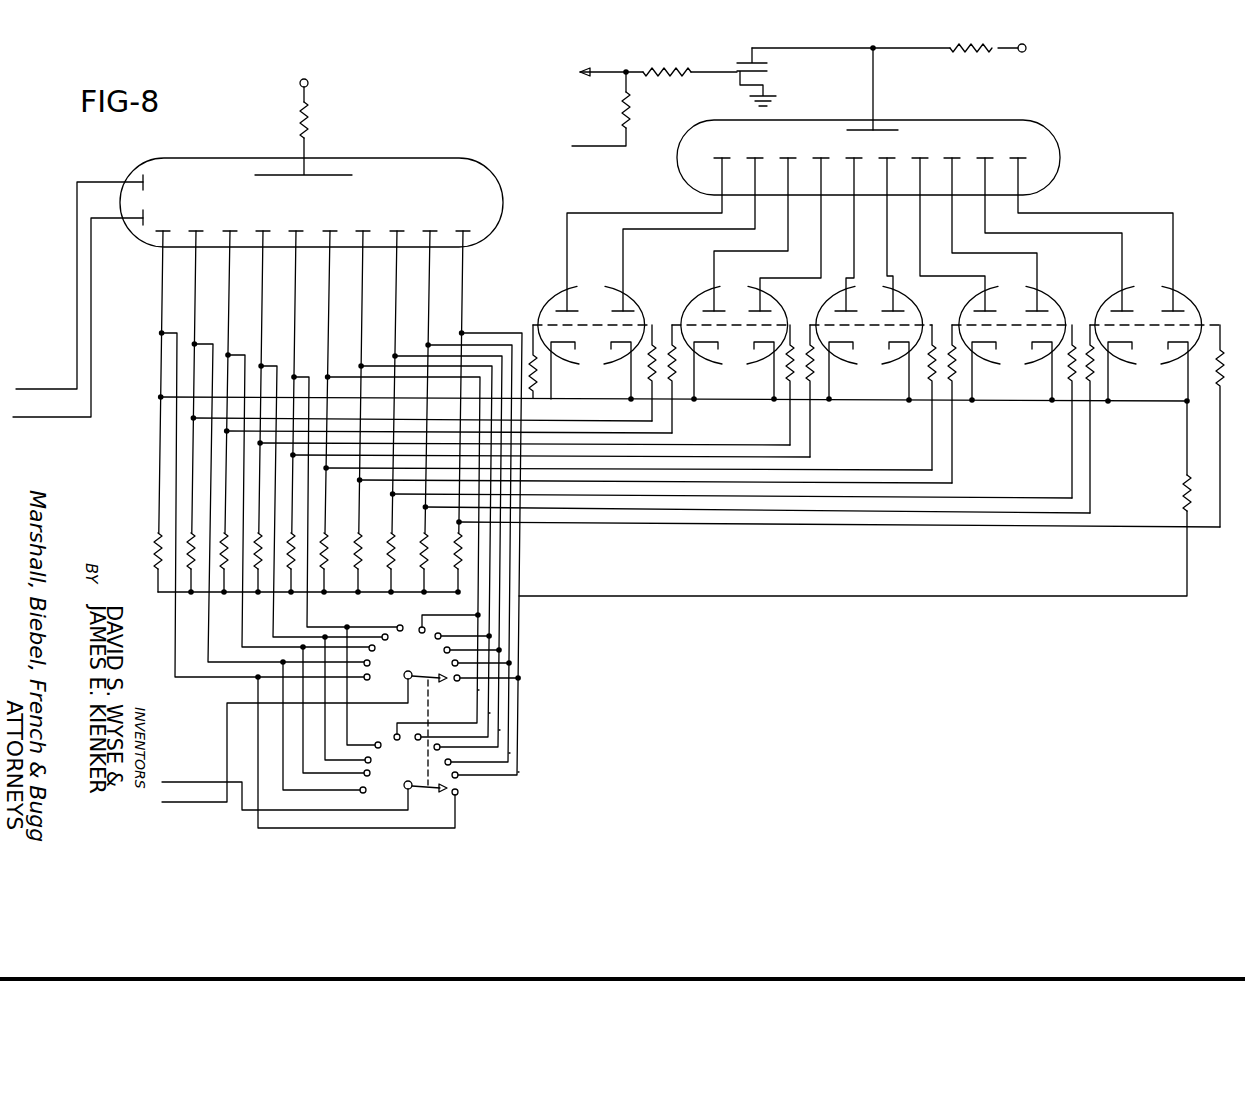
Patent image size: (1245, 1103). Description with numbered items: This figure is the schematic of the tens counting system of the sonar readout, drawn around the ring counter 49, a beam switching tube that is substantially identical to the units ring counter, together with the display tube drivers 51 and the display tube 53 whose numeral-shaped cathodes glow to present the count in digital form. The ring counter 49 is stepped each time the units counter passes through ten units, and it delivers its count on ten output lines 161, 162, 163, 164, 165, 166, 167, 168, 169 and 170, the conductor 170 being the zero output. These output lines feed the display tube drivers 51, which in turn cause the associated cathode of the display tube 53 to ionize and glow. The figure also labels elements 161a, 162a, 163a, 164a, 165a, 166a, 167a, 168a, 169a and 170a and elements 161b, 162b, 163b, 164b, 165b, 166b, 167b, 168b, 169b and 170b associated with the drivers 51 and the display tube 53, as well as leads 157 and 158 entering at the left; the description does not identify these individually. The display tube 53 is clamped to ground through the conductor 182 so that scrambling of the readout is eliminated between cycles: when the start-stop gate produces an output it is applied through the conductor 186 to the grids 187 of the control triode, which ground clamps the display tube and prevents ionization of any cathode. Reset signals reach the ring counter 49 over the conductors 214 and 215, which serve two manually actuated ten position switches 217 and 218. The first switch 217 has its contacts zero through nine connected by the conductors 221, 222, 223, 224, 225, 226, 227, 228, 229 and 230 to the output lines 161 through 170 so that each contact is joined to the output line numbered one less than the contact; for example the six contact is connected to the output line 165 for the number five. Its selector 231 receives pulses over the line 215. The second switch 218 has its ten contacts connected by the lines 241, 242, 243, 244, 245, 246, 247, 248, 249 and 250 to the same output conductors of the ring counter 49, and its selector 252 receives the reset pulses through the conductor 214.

The ring counter 49 is at (367, 158).
The display tube driver 51 is at (546, 304).
The display tube 53 is at (1055, 125).
The input lead 157 is at (49, 420).
The input lead 158 is at (64, 388).
The output line 161 is at (161, 293).
The output line 162 is at (194, 297).
The output line 163 is at (227, 301).
The output line 164 is at (262, 297).
The output line 165 is at (294, 301).
The output line 166 is at (328, 297).
The output line 167 is at (361, 301).
The output line 168 is at (396, 295).
The output line 169 is at (428, 301).
The 0-output conductor 170 is at (463, 302).
The triode section 161a is at (561, 360).
The triode section 162a is at (638, 302).
The triode section 163a is at (704, 360).
The triode section 164a is at (783, 312).
The triode section 165a is at (839, 360).
The triode section 166a is at (923, 313).
The triode section 167a is at (982, 360).
The triode section 168a is at (1057, 302).
The triode section 169a is at (1118, 360).
The triode section 170a is at (1169, 292).
The anode lead 161b is at (713, 160).
The anode lead 162b is at (753, 165).
The anode lead 163b is at (785, 165).
The anode lead 164b is at (818, 180).
The anode lead 165b is at (850, 158).
The anode lead 166b is at (897, 158).
The anode lead 167b is at (930, 158).
The anode lead 168b is at (962, 158).
The anode lead 169b is at (994, 160).
The anode lead 170b is at (1025, 160).
The conductor 182 is at (875, 68).
The conductor 186 is at (603, 70).
The grids 187 is at (768, 71).
The conductor 214 is at (203, 782).
The conductor 215 is at (197, 803).
The ten position switch 217 is at (407, 616).
The ten position switch 218 is at (461, 780).
The conductor 221 is at (176, 437).
The conductor 222 is at (211, 467).
The conductor 223 is at (242, 495).
The conductor 224 is at (272, 507).
The conductor 225 is at (307, 603).
The conductor 226 is at (478, 540).
The conductor 227 is at (490, 556).
The conductor 228 is at (500, 573).
The conductor 229 is at (510, 608).
The conductor 230 is at (519, 633).
The selector 231 is at (442, 685).
The line 241 is at (258, 827).
The line 242 is at (283, 725).
The line 243 is at (300, 692).
The line 244 is at (325, 713).
The line 245 is at (348, 688).
The line 246 is at (478, 690).
The line 247 is at (489, 713).
The line 248 is at (499, 730).
The line 249 is at (509, 753).
The line 250 is at (518, 772).
The selector 252 is at (410, 790).